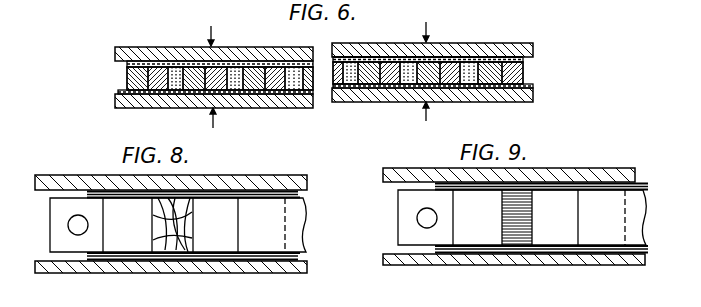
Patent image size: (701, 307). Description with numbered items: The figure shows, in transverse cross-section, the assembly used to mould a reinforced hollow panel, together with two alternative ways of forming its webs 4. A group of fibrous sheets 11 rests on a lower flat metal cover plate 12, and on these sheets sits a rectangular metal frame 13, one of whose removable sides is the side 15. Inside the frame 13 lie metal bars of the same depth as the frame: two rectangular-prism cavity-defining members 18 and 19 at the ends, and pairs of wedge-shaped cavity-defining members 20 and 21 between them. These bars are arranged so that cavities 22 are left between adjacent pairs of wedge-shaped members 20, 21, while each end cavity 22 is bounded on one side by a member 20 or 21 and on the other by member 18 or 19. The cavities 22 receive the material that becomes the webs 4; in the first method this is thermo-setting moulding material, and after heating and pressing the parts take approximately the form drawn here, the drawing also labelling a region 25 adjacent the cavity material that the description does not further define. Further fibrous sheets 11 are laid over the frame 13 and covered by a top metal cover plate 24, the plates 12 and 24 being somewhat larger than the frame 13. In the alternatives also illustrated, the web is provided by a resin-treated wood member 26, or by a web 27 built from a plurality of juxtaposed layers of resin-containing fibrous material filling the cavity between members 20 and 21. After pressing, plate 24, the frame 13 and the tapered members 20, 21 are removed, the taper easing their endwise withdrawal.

In FIG. 6, the web 4 is at (179, 70).
In FIG. 6, the fibrous sheets 11 is at (542, 53).
In FIG. 8, the fibrous sheets 11 is at (257, 191).
In FIG. 9, the fibrous sheets 11 is at (488, 184).
In FIG. 6, the lower flat metal cover plate 12 is at (531, 91).
In FIG. 8, the lower flat metal cover plate 12 is at (86, 268).
In FIG. 9, the lower flat metal cover plate 12 is at (421, 262).
In FIG. 6, the rectangular metal frame 13 is at (128, 77).
In FIG. 8, the rectangular metal frame 13 is at (52, 220).
In FIG. 9, the rectangular metal frame 13 is at (522, 217).
In FIG. 6, the side of the frame 15 is at (164, 4).
In FIG. 6, the cavity-defining member 18 is at (160, 66).
In FIG. 6, the cavity-defining member 19 is at (488, 57).
In FIG. 6, the wedge-shaped cavity-defining member 20 is at (238, 66).
In FIG. 8, the wedge-shaped cavity-defining member 20 is at (229, 218).
In FIG. 9, the wedge-shaped cavity-defining member 20 is at (567, 212).
In FIG. 6, the wedge-shaped cavity-defining member 21 is at (280, 66).
In FIG. 8, the wedge-shaped cavity-defining member 21 is at (275, 218).
In FIG. 9, the wedge-shaped cavity-defining member 21 is at (610, 212).
In FIG. 6, the cavities 22 is at (287, 91).
In FIG. 8, the cavities 22 is at (193, 234).
In FIG. 9, the cavities 22 is at (533, 231).
In FIG. 6, the top metal cover plate 24 is at (456, 50).
In FIG. 8, the top metal cover plate 24 is at (90, 178).
In FIG. 9, the top metal cover plate 24 is at (437, 176).
In FIG. 6, the spacer region 25 is at (414, 78).
In FIG. 8, the wood member 26 is at (156, 225).
In FIG. 9, the web 27 is at (503, 222).